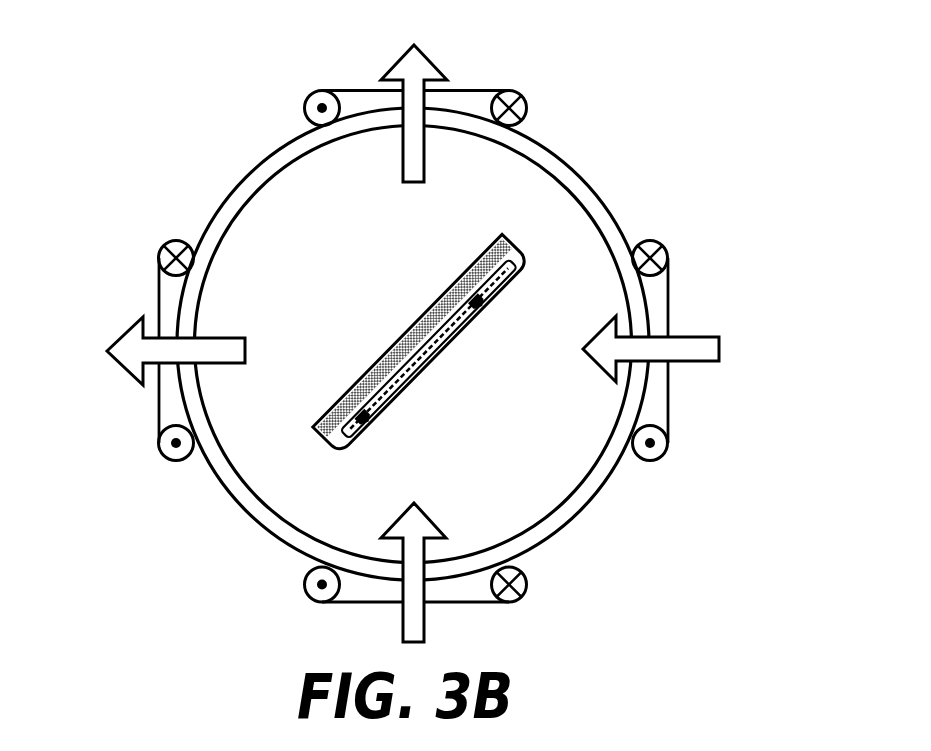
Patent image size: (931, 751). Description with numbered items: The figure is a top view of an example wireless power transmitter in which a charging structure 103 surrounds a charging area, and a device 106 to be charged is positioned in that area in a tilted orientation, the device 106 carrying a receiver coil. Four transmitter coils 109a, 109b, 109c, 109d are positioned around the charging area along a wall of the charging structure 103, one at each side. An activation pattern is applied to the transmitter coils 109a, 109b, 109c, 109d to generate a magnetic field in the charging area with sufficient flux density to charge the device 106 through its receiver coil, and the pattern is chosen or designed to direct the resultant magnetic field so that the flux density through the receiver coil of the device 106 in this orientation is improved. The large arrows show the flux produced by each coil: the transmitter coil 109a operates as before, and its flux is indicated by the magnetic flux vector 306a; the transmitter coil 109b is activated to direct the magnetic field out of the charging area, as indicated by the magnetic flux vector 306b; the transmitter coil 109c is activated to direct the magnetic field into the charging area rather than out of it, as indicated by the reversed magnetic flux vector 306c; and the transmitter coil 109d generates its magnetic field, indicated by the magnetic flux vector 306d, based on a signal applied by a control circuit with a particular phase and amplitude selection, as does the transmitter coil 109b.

The charging structure 103 is at (170, 103).
The device 106 is at (421, 336).
The transmitter coil 109a is at (140, 298).
The transmitter coil 109b is at (473, 80).
The transmitter coil 109c is at (682, 298).
The transmitter coil 109d is at (452, 610).
The magnetic flux vector 306a is at (215, 330).
The magnetic flux vector 306b is at (432, 162).
The reversed magnetic flux vector 306c is at (593, 373).
The magnetic flux vector 306d is at (390, 512).